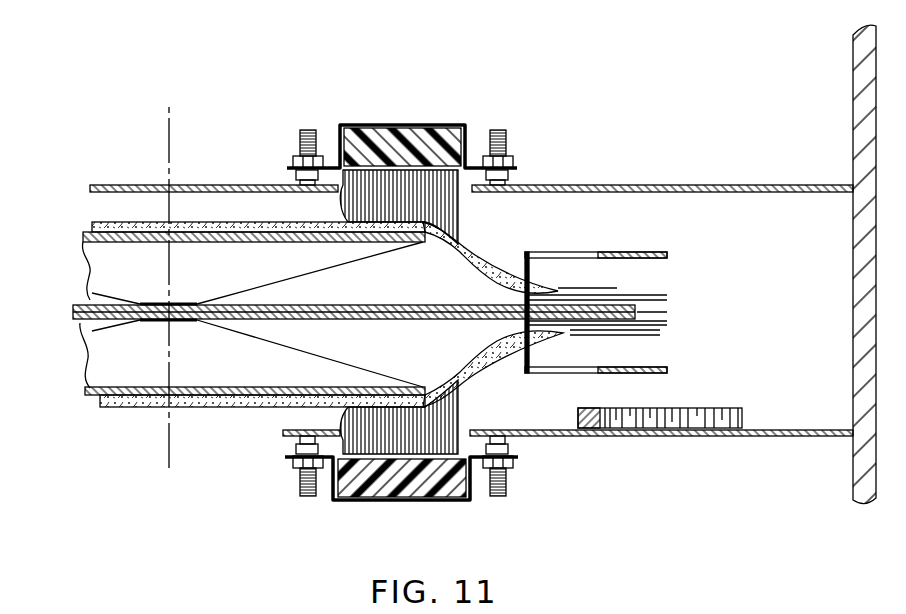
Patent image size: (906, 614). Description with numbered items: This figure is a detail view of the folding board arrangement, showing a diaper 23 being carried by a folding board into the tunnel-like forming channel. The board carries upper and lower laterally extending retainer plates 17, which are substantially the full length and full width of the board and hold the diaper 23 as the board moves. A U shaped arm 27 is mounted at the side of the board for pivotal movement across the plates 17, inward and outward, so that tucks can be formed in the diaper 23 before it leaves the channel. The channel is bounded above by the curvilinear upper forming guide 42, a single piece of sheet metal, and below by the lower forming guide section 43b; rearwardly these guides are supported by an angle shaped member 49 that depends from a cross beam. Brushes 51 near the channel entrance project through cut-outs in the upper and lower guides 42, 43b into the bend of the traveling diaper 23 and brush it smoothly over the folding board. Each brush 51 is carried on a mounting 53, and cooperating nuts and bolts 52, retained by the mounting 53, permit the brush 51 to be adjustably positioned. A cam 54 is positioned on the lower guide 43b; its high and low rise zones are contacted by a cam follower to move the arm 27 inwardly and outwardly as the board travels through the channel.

The retainer plate 17 is at (87, 300).
The diaper 23 is at (488, 260).
The U shaped arm 27 is at (633, 252).
The upper forming guide 42 is at (665, 185).
The lower forming guide section 43b is at (823, 437).
The angle shaped member 49 is at (853, 111).
The brush 51 is at (383, 140).
The cooperating nuts and bolts 52 is at (308, 130).
The mounting 53 is at (340, 125).
The cam 54 is at (695, 408).